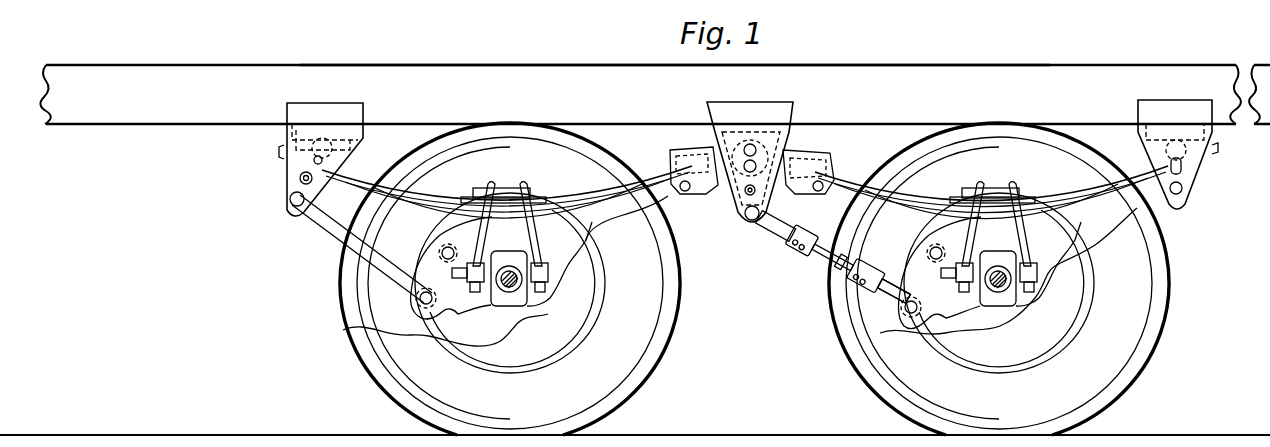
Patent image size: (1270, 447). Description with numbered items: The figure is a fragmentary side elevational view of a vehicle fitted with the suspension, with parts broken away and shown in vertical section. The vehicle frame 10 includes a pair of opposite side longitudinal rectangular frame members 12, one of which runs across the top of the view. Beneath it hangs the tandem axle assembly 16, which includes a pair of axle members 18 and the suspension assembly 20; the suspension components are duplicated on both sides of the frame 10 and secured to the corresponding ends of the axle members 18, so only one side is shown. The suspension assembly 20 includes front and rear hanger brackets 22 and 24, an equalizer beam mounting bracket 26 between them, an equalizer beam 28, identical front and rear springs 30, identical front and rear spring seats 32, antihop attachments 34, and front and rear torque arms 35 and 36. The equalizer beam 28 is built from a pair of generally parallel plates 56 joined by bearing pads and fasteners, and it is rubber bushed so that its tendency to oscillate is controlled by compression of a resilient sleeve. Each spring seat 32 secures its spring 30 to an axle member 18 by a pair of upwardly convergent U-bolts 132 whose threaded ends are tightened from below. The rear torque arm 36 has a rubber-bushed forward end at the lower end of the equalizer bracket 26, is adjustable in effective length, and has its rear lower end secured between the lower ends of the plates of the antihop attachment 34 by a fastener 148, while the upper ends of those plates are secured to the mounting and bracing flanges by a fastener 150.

The vehicle frame 10 is at (909, 64).
The longitudinal rectangular frame member 12 is at (1052, 84).
The tandem axle assembly 16 is at (1155, 330).
The axle member 18 is at (520, 300).
The suspension assembly 20 is at (812, 262).
The front hanger bracket 22 is at (350, 126).
The rear hanger bracket 24 is at (1182, 96).
The equalizer beam mounting bracket 26 is at (801, 116).
The equalizer beam 28 is at (851, 150).
The spring 30 is at (606, 178).
The spring seat 32 is at (553, 248).
The antihop attachment 34 is at (445, 316).
The front torque arm 35 is at (376, 269).
The rear torque arm 36 is at (852, 304).
The plate 56 is at (721, 186).
The U-bolt 132 is at (523, 187).
The fastener 148 is at (912, 316).
The fastener 150 is at (928, 255).